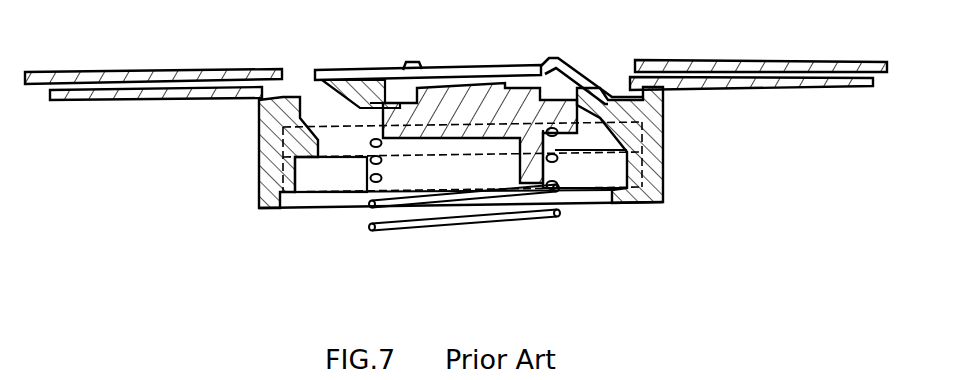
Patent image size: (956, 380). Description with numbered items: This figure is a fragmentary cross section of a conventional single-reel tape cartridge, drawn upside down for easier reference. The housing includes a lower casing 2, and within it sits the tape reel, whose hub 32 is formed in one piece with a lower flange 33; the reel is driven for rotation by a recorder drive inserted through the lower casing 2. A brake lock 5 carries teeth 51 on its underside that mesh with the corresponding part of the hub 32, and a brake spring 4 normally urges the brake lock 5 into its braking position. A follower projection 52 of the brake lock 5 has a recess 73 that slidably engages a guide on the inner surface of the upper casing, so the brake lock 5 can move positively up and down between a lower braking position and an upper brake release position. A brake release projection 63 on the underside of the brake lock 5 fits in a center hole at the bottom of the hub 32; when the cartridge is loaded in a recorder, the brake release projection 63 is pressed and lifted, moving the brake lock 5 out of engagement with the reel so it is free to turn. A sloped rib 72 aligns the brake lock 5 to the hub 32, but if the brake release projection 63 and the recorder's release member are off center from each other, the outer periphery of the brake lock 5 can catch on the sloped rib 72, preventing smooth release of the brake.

The lower casing 2 is at (812, 58).
The lower flange 33 is at (852, 87).
The hub 32 is at (665, 172).
The teeth 51 is at (330, 82).
The brake release projection 63 is at (479, 88).
The brake lock 5 is at (547, 62).
The sloped rib 72 is at (312, 196).
The recess 73 is at (413, 195).
The follower projection 52 is at (390, 204).
The brake spring 4 is at (509, 222).